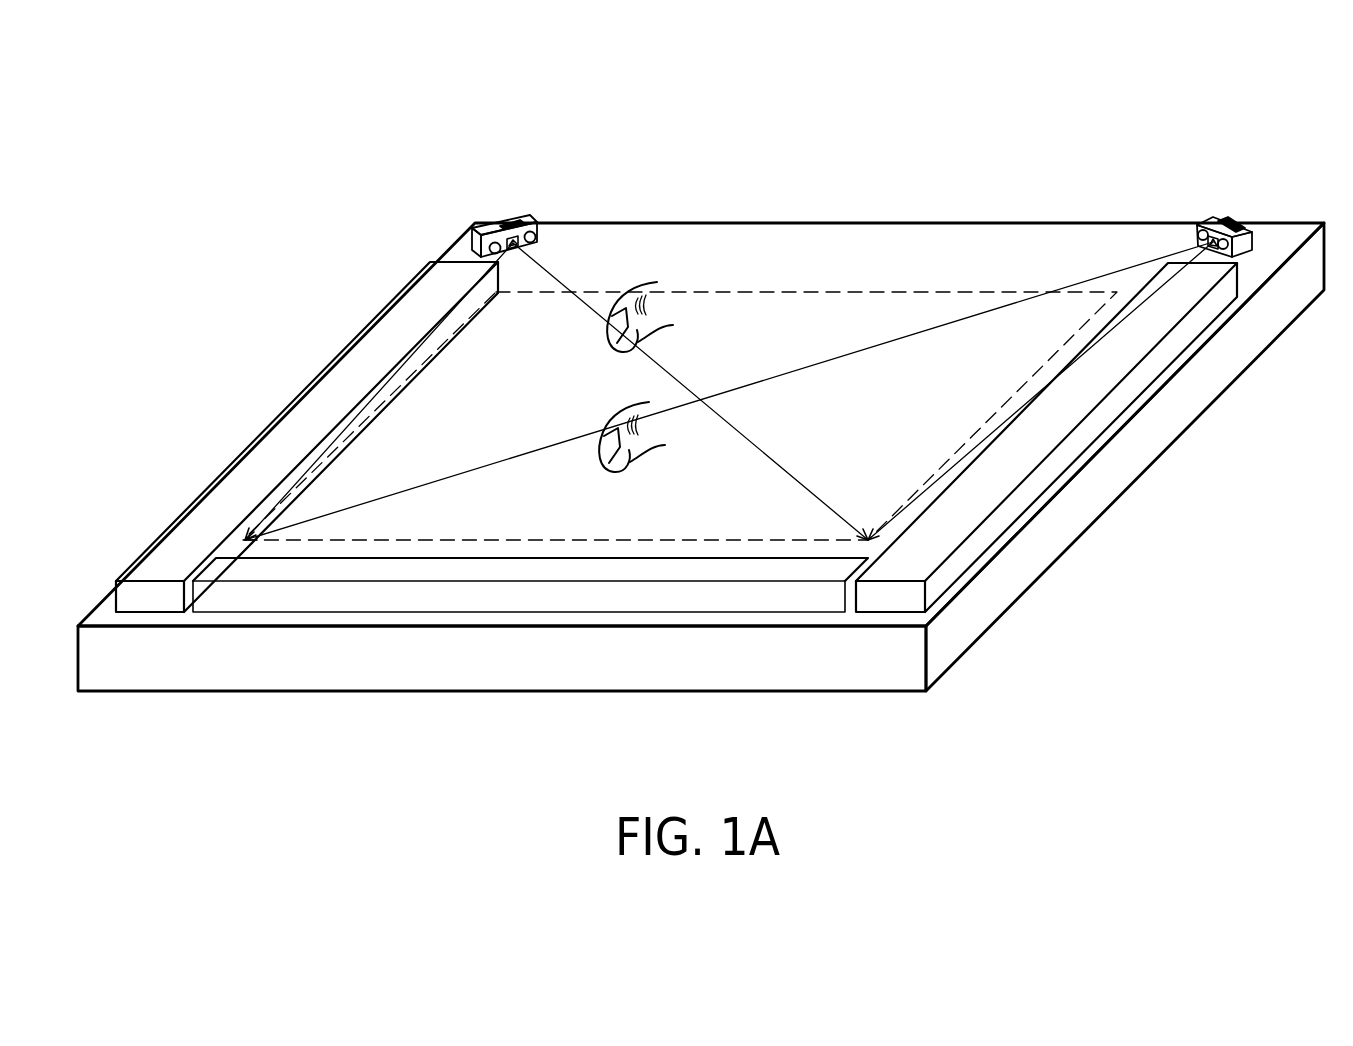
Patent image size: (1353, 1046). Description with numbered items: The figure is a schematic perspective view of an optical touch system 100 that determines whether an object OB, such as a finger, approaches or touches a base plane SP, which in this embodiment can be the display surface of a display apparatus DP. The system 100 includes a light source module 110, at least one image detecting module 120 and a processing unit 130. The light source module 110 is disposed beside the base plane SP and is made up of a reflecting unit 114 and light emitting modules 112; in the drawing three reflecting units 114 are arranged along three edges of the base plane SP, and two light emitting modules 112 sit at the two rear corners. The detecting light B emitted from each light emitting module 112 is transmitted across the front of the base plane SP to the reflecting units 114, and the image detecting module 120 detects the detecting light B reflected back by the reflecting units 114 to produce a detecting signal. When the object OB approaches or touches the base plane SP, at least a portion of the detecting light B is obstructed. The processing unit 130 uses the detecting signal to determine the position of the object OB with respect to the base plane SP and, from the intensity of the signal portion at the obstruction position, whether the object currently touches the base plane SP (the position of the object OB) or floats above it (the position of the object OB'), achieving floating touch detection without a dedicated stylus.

The optical touch system 100 is at (1210, 750).
The light source module 110 is at (905, 62).
The light emitting module 112 is at (528, 220).
The reflecting unit 114 is at (295, 424).
The image detecting module 120 is at (541, 234).
The processing unit 130 is at (499, 223).
The display panel DP is at (800, 240).
The base plane SP is at (960, 292).
The detecting light B is at (340, 437).
The object OB is at (670, 445).
The object OB' is at (678, 317).